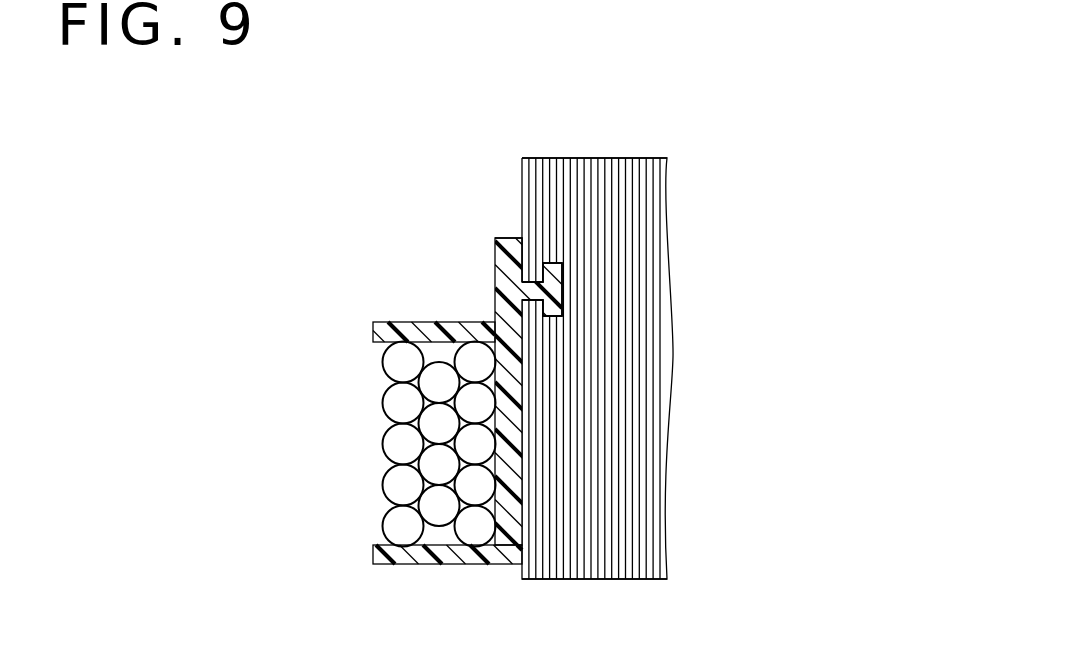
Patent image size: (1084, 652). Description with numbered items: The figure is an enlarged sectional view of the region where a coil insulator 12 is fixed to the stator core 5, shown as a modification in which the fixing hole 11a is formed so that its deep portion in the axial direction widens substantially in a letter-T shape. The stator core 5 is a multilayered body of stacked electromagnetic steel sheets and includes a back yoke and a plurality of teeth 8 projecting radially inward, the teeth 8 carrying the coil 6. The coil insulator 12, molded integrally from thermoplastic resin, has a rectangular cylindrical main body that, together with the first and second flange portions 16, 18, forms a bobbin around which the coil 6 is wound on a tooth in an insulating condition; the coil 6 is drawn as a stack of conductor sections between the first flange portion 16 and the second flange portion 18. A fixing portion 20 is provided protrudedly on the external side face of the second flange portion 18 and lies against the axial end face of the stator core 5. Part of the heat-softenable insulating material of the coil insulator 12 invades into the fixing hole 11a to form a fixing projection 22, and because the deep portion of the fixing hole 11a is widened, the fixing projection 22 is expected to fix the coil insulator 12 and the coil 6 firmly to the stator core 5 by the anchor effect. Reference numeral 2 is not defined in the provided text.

The stator core / block 2 is at (622, 153).
The stator core 5 is at (555, 158).
The coil 6 is at (382, 445).
The teeth 8 is at (577, 580).
The fixing hole 11a is at (552, 268).
The coil insulator 12 is at (494, 238).
The first flange portion 16 is at (373, 555).
The second flange portion 18 is at (373, 330).
The fixing portion 20 is at (495, 270).
The fixing projection 22 is at (539, 270).